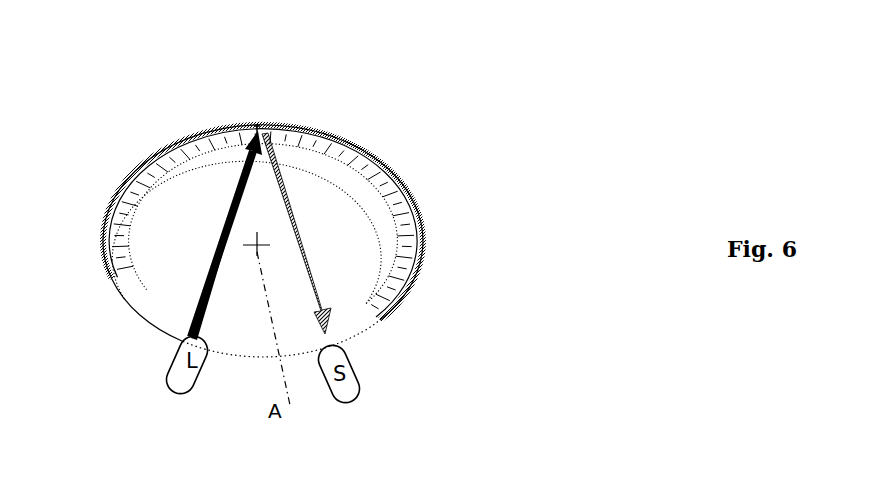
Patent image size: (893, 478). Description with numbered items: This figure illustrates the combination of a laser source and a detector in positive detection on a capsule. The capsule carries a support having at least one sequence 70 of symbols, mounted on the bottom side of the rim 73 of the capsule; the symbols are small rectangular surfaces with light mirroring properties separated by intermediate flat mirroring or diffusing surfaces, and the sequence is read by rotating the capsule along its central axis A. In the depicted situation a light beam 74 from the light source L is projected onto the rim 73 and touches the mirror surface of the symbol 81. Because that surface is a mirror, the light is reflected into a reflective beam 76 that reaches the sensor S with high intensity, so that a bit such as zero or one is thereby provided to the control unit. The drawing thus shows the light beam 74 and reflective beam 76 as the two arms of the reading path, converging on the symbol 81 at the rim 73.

The sequence 70 is at (383, 175).
The rim 73 is at (142, 157).
The light beam 74 is at (218, 250).
The reflective beam 76 is at (301, 249).
The symbol 81 is at (257, 124).